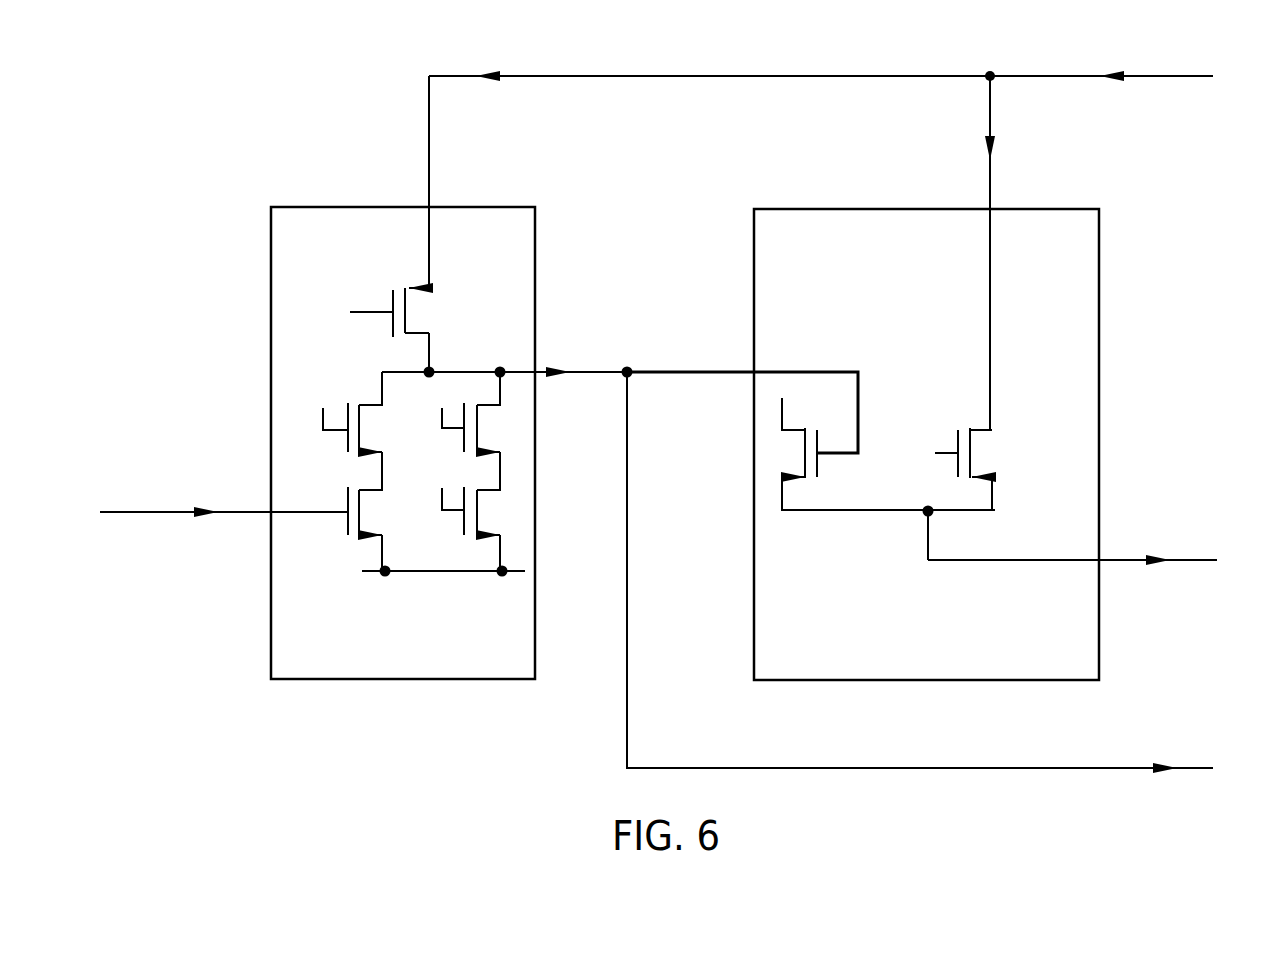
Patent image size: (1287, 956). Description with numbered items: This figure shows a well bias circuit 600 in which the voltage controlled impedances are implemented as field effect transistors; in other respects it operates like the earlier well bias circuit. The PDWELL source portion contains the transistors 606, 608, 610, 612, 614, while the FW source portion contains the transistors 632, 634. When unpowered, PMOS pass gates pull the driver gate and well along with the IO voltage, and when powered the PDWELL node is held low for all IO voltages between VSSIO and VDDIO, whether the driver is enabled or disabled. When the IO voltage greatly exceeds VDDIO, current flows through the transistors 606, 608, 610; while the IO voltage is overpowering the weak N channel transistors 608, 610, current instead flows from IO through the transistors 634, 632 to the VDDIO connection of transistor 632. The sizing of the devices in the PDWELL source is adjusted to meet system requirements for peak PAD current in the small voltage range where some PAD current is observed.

The well bias circuit 600 is at (374, 721).
The voltage controlled impedance 606 is at (410, 323).
The voltage controlled impedance 608 is at (478, 425).
The voltage controlled impedance 610 is at (478, 508).
The voltage controlled impedance 612 is at (345, 526).
The voltage controlled impedance 614 is at (345, 444).
The voltage controlled impedance 632 is at (805, 450).
The voltage controlled impedance 634 is at (975, 445).